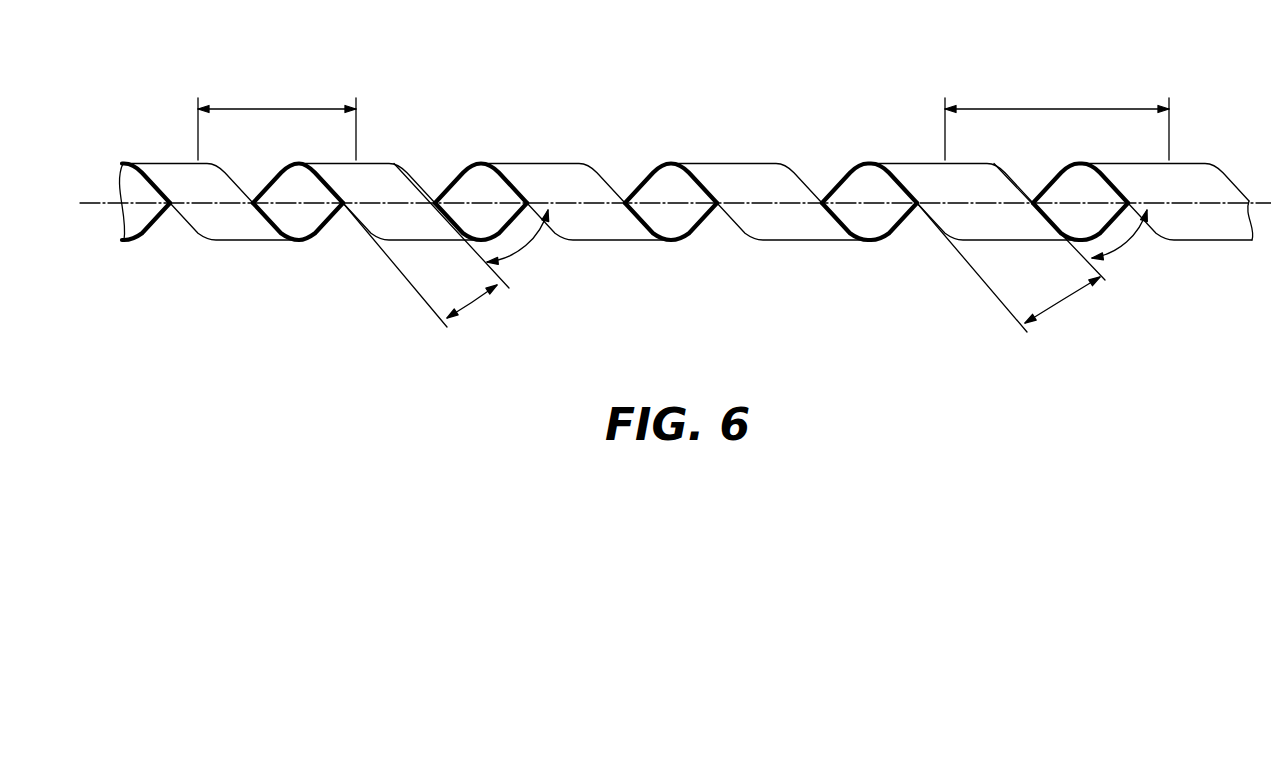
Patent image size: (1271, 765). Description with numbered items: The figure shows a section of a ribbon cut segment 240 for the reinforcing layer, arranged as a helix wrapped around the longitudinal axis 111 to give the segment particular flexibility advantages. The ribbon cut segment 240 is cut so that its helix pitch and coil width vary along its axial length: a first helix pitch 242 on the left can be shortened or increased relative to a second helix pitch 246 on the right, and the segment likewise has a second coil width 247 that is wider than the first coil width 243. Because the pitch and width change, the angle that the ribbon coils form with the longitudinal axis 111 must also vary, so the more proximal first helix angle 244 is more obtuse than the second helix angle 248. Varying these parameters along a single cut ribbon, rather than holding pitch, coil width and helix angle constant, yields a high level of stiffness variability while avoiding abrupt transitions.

The longitudinal axis 111 is at (208, 205).
The ribbon cut segment 240 is at (533, 161).
The first helix pitch 242 is at (274, 105).
The first coil width 243 is at (473, 304).
The first helix angle 244 is at (531, 248).
The second helix pitch 246 is at (1057, 105).
The second coil width 247 is at (1062, 302).
The second helix angle 248 is at (1127, 250).